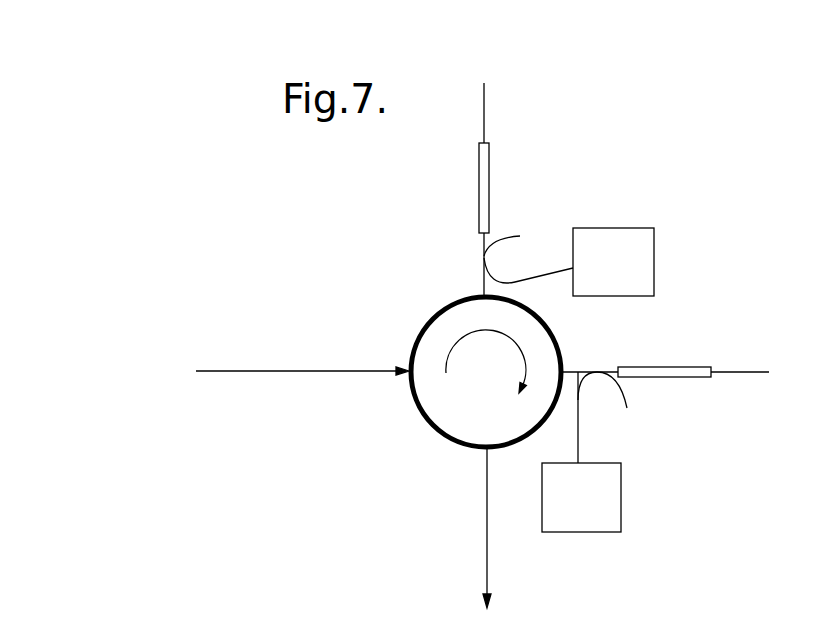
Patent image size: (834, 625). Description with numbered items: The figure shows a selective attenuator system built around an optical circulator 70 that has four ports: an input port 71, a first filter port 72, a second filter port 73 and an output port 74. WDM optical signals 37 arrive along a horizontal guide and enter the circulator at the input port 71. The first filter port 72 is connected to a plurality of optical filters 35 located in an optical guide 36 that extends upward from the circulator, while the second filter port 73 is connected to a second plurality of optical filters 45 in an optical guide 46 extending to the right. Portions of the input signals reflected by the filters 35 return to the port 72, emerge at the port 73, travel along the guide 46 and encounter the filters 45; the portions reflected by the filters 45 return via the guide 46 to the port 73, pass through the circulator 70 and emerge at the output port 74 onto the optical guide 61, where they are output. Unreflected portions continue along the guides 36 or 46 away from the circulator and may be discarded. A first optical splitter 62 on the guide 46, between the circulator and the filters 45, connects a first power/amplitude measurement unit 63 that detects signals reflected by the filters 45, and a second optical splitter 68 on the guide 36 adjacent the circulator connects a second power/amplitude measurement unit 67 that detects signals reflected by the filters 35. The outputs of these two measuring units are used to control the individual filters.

The optical guide 36 is at (484, 83).
The plurality of optical filters 35 is at (479, 178).
The first filter port 72 is at (480, 294).
The second optical splitter 68 is at (523, 256).
The second power/amplitude measurement unit 67 is at (599, 274).
The optical circulator 70 is at (470, 381).
The WDM optical signals 37 is at (239, 371).
The input port 71 is at (408, 368).
The second filter port 73 is at (577, 372).
The second plurality of optical filters 45 is at (663, 367).
The optical guide 46 is at (769, 372).
The first optical splitter 62 is at (598, 380).
The first power/amplitude measurement unit 63 is at (566, 508).
The output port 74 is at (482, 455).
The optical guide 61 is at (490, 590).